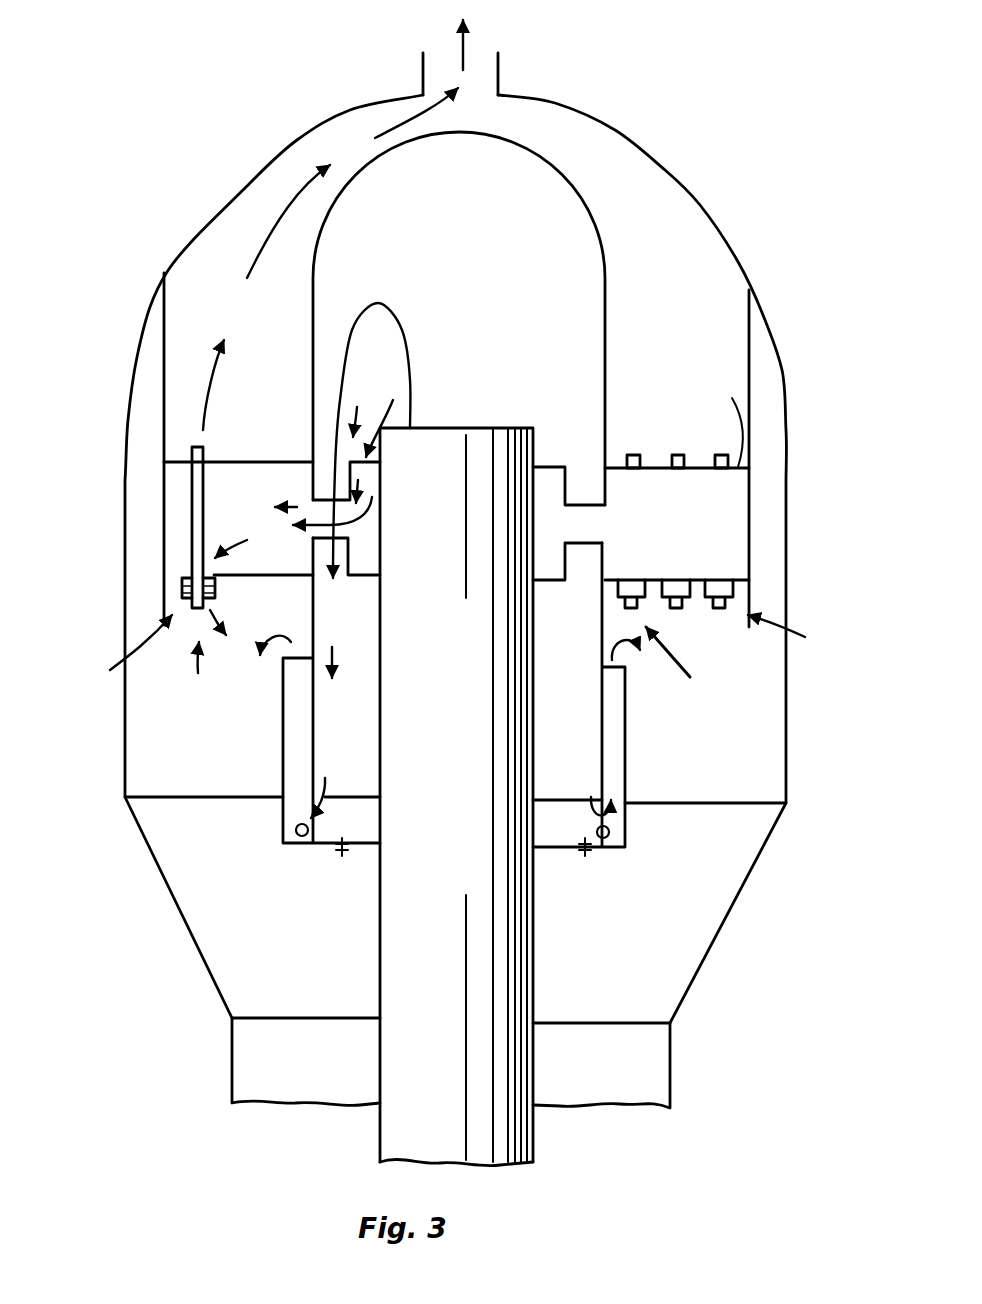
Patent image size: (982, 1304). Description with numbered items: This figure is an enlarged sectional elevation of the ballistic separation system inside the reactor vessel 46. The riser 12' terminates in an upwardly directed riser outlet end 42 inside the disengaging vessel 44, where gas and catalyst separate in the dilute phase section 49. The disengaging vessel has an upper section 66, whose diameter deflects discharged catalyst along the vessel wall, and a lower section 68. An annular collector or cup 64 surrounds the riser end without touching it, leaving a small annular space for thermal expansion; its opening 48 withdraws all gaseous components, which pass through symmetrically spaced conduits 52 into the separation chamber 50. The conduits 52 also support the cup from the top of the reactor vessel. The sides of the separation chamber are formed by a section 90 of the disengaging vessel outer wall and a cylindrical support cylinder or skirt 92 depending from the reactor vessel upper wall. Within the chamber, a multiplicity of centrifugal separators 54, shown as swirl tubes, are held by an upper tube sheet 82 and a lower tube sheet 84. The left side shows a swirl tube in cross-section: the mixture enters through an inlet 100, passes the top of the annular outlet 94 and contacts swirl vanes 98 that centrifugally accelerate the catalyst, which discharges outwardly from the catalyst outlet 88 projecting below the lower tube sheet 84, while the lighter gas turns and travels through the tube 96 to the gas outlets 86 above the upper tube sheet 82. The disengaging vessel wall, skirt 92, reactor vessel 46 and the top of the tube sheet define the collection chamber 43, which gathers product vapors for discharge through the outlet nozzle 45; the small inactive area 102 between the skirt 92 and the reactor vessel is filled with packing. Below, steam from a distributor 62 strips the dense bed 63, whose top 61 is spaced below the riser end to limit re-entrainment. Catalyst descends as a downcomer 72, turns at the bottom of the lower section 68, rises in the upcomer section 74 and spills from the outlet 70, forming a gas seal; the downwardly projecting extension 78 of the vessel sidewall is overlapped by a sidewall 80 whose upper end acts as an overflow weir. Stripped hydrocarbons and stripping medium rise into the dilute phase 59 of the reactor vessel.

The overhead conduit 45 is at (498, 74).
The reactor vessel 46 is at (787, 536).
The inactive area 102 is at (150, 337).
The cylindrical support cylinder 92 is at (164, 473).
The upper section 66 is at (588, 207).
The dilute phase section 49 is at (436, 205).
The collection chamber 43 is at (653, 297).
The separation chamber 50 is at (730, 502).
The conduit 52 is at (582, 493).
The outlet 48 is at (552, 462).
The annular collector 64 is at (573, 568).
The section of outer wall 90 is at (308, 493).
The inlet 100 is at (315, 510).
The riser 12' is at (487, 797).
The riser outlet end 42 is at (542, 433).
The gas outlet 86 is at (208, 462).
The tube 96 is at (190, 515).
The annular outlet 94 is at (183, 578).
The swirl vanes 98 is at (182, 590).
The catalyst outlet 88 is at (215, 592).
The centrifugal separator 54 is at (455, 615).
The upper tube sheet 82 is at (680, 462).
The lower tube sheet 84 is at (697, 585).
The disengaging vessel 44 is at (682, 666).
The outlet 70 is at (305, 657).
The upcomer section 74 is at (614, 735).
The dense bed 63 is at (548, 800).
The downwardly projecting extension 78 is at (308, 797).
The sidewall 80 is at (283, 823).
The distributor 62 is at (298, 838).
The top of the dense bed 61 is at (328, 838).
The lower section 68 is at (585, 850).
The downcomer 72 is at (560, 823).
The dilute phase 59 is at (243, 982).